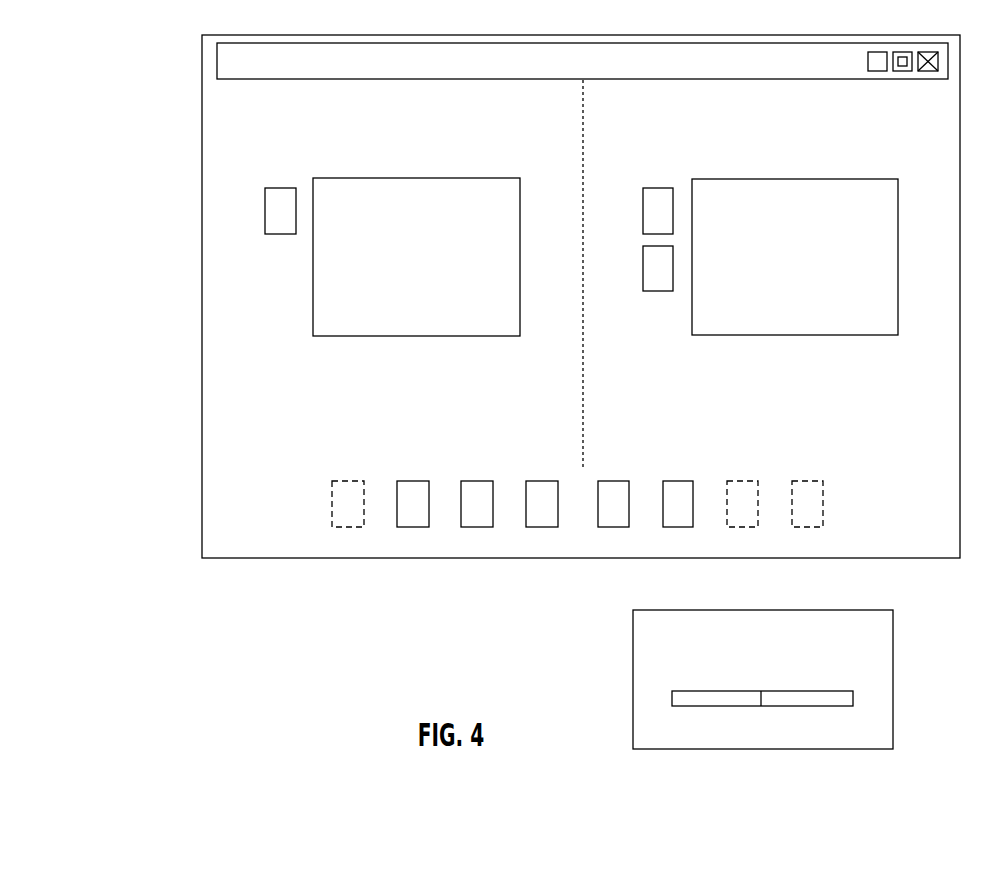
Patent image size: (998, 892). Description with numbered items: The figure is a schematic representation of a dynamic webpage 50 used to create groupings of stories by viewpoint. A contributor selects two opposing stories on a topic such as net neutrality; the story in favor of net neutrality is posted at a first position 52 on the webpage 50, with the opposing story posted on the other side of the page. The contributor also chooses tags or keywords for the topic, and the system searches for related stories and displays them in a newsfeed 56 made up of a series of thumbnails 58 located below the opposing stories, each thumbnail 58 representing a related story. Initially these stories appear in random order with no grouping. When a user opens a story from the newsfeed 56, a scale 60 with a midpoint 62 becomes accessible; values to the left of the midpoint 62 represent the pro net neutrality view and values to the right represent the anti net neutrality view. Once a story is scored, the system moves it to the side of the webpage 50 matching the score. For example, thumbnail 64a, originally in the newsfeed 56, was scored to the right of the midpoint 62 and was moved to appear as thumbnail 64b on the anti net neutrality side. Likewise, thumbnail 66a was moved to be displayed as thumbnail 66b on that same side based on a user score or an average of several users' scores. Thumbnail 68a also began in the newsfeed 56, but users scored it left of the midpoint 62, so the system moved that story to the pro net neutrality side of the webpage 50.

The dynamic webpage 50 is at (545, 296).
The first position 52 is at (619, 230).
The newsfeed 56 is at (643, 471).
The thumbnail 58 is at (613, 504).
The scale 60 is at (806, 657).
The midpoint 62 is at (718, 722).
The thumbnail 64a is at (788, 473).
The thumbnail 64b is at (682, 184).
The thumbnail 66a is at (717, 473).
The thumbnail 66b is at (640, 298).
The thumbnail 68a is at (296, 357).